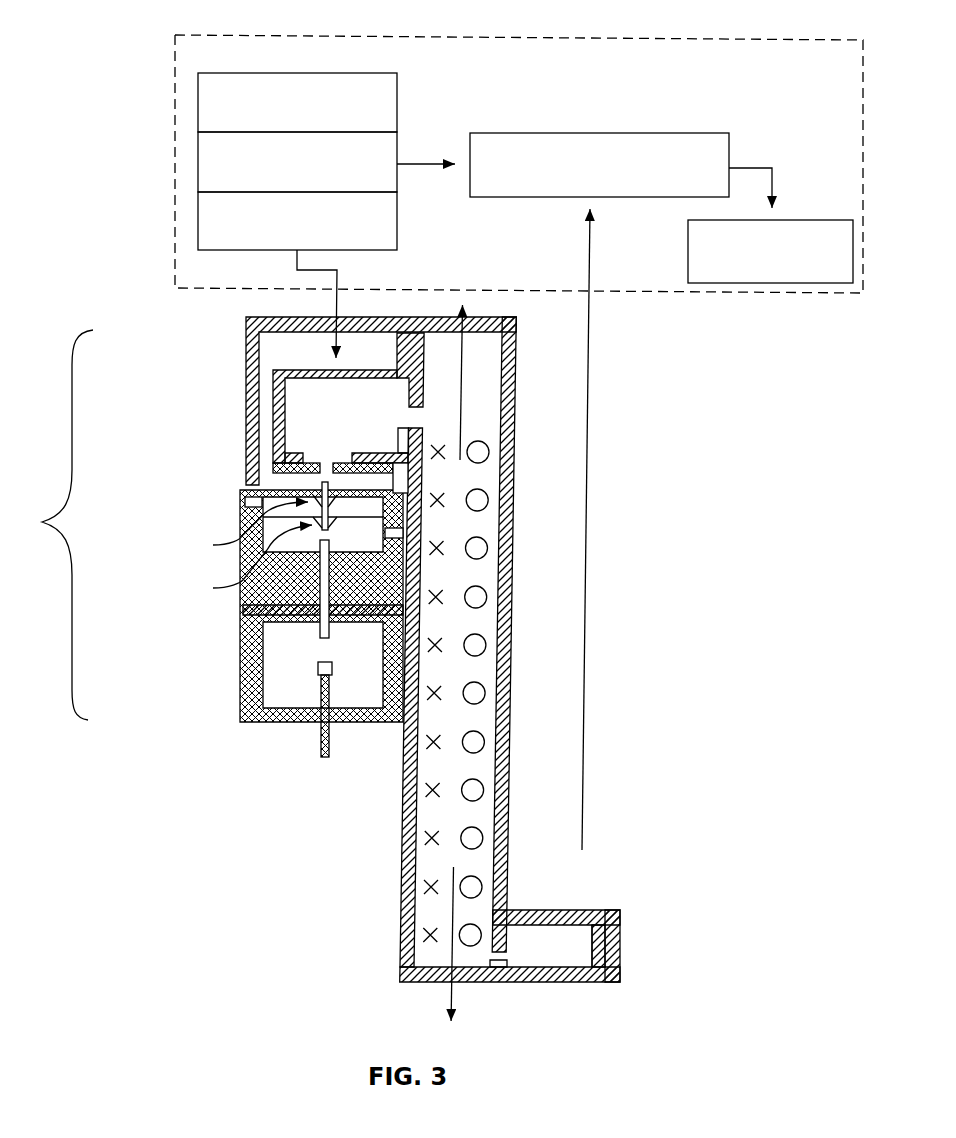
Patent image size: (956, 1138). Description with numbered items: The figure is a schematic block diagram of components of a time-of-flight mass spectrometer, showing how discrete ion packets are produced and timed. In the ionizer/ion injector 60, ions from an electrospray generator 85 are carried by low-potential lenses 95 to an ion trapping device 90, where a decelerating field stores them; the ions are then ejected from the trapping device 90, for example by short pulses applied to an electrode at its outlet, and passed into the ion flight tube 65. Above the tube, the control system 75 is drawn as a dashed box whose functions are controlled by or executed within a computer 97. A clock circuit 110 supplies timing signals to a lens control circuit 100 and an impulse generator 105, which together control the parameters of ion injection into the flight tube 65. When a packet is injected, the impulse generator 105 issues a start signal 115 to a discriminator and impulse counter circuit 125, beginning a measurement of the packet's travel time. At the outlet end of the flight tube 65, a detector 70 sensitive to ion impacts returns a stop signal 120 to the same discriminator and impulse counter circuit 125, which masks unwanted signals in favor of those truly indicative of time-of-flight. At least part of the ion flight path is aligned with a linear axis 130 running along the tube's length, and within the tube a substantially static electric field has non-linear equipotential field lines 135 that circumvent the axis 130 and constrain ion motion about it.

The control system 75 is at (817, 37).
The clock circuit 110 is at (198, 103).
The impulse generator 105 is at (198, 160).
The lens control circuit 100 is at (198, 218).
The start signal 115 is at (437, 167).
The discriminator and impulse counter circuit 125 is at (729, 150).
The computer 97 is at (788, 220).
The stop signal 120 is at (588, 385).
The ionizer/ion injector 60 is at (51, 525).
The ion trapping device 90 is at (253, 363).
The low-potential lenses 95 is at (257, 475).
The electrospray generator 85 is at (252, 678).
The ion flight tube 65 is at (508, 547).
The non-linear equipotential field lines 135 is at (485, 693).
The detector 70 is at (612, 950).
The linear axis 130 is at (455, 995).